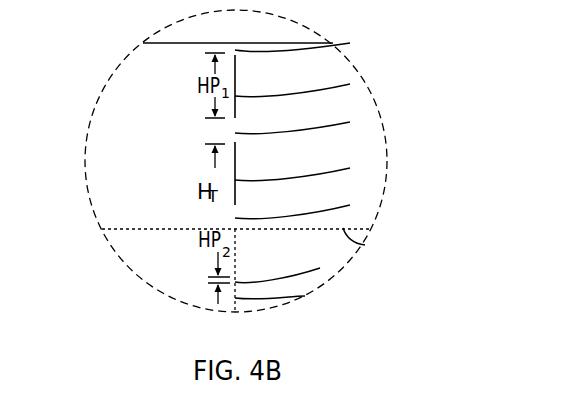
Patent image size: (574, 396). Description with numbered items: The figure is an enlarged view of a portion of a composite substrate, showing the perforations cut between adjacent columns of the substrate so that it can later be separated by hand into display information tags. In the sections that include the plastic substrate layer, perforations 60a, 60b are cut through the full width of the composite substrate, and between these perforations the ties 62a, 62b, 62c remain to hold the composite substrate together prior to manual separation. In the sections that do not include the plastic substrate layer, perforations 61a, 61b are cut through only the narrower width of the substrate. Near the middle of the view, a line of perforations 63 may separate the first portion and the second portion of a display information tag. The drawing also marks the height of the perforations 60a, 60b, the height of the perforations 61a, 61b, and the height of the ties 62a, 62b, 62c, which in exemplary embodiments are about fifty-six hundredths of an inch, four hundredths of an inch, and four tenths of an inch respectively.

The tie 62a is at (350, 43).
The perforation 60a is at (350, 84).
The tie 62b is at (350, 122).
The perforation 60b is at (350, 168).
The tie 62c is at (350, 205).
The line of perforations 63 is at (365, 245).
The perforation 61b is at (320, 268).
The perforation 61a is at (305, 296).